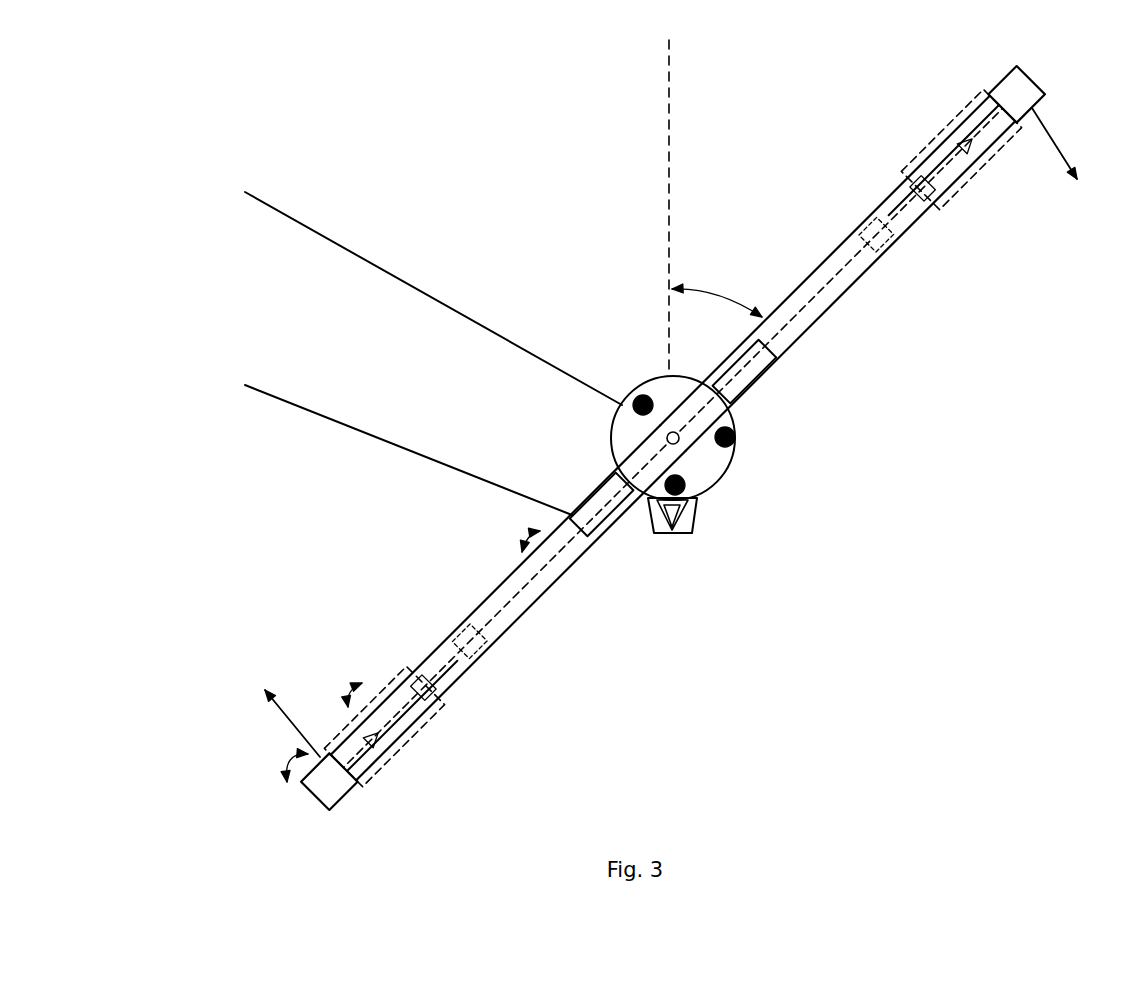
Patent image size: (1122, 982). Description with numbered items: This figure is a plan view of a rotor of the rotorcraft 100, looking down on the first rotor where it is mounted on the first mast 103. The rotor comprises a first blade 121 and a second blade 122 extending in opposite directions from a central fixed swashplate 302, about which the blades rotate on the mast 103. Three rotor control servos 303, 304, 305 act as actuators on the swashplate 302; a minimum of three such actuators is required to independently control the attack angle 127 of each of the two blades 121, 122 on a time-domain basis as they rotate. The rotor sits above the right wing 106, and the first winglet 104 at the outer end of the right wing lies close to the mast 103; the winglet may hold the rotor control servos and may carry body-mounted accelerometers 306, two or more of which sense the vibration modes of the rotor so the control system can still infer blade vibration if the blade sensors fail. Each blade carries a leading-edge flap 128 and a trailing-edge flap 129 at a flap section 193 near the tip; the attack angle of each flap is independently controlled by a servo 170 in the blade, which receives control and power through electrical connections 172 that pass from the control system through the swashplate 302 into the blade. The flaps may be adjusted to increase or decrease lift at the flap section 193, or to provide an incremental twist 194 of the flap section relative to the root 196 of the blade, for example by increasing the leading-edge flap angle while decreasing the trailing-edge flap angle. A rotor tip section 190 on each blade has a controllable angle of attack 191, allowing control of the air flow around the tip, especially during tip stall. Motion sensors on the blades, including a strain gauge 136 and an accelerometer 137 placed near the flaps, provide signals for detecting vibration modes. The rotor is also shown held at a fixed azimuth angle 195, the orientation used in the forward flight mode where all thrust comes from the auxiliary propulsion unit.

The rotorcraft 100 is at (541, 118).
The first mast 103 is at (683, 444).
The first winglet 104 is at (690, 520).
The right wing 106 is at (375, 265).
The first blade 121 is at (850, 236).
The second blade 122 is at (493, 590).
The attack angle 127 is at (525, 538).
The leading-edge flap 128 is at (970, 173).
The trailing-edge flap 129 is at (928, 150).
The strain gauge 136 is at (770, 365).
The accelerometer 137 is at (962, 147).
The servo 170 is at (872, 228).
The electrical connections 172 is at (850, 282).
The rotor tip section 190 is at (1031, 78).
The controllable angle of attack 191 is at (285, 760).
The flap section 193 is at (945, 207).
The incremental twist 194 is at (352, 684).
The fixed azimuth angle 195 is at (715, 208).
The root 196 is at (615, 433).
The swashplate 302 is at (735, 458).
The rotor control servo 303 is at (640, 398).
The rotor control servo 304 is at (735, 437).
The rotor control servo 305 is at (685, 492).
The accelerometer 306 is at (668, 538).